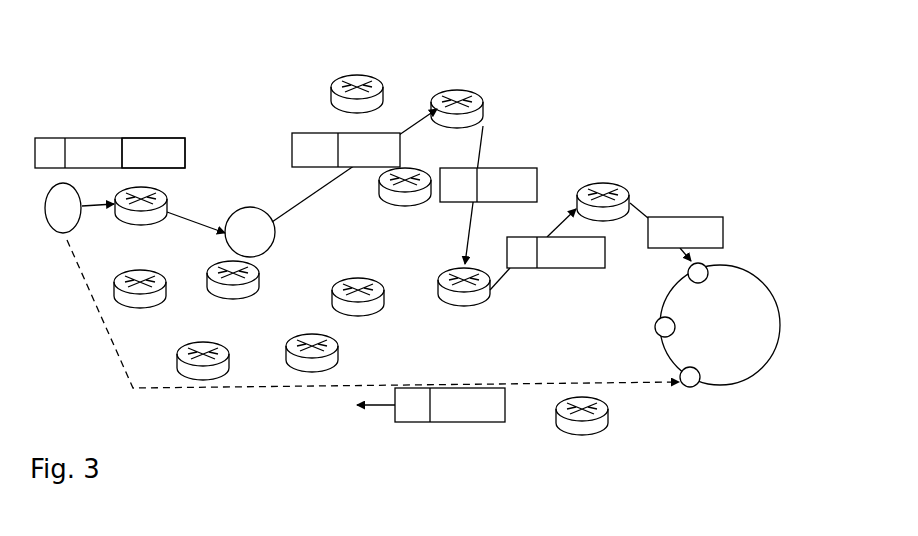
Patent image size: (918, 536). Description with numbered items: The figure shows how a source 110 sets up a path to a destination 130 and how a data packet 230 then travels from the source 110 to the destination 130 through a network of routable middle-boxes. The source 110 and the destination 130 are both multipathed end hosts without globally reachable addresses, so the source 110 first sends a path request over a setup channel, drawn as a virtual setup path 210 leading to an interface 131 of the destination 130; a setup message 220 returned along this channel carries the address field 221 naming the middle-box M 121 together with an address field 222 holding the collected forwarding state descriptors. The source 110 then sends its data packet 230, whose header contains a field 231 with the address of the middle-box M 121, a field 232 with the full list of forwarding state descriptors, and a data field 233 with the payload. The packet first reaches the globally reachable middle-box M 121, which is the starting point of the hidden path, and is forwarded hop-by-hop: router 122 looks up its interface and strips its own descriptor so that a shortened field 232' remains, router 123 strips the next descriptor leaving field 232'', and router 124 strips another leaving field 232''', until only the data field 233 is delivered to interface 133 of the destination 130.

The source 110 is at (56, 247).
The middle-box M 121 is at (248, 207).
The router 122 is at (515, 106).
The router node 123 is at (441, 293).
The router node 124 is at (632, 163).
The destination 130 is at (717, 362).
The destination port 131 is at (664, 415).
The destination port 133 is at (653, 286).
The virtual setup path 210 is at (353, 330).
The setup message 220 is at (372, 446).
The setup message M flag field 221 is at (414, 445).
The setup message address field 222 is at (472, 447).
The data packet 230 is at (80, 59).
The packet M flag field 231 is at (51, 114).
The packet address field 232 is at (103, 114).
The shortened address field 232' is at (340, 111).
The shortened address field 232'' is at (460, 223).
The shortened address field 232''' is at (556, 293).
The packet data field 233 is at (439, 154).